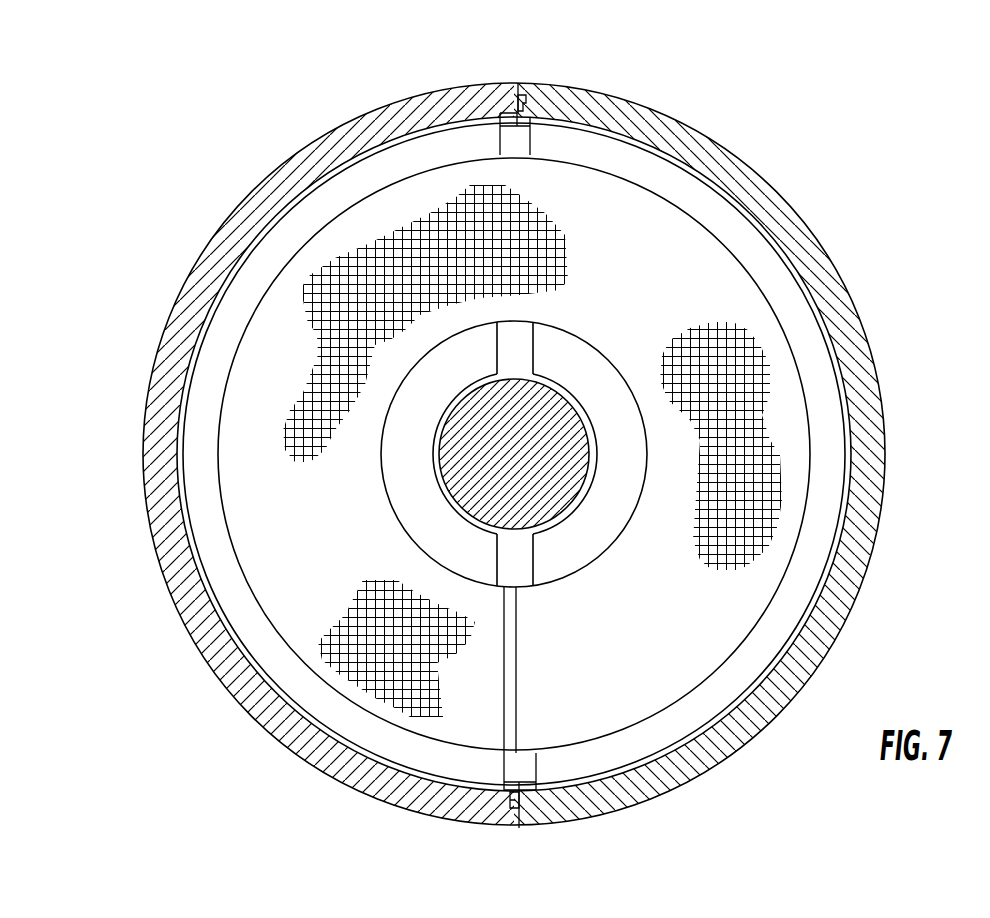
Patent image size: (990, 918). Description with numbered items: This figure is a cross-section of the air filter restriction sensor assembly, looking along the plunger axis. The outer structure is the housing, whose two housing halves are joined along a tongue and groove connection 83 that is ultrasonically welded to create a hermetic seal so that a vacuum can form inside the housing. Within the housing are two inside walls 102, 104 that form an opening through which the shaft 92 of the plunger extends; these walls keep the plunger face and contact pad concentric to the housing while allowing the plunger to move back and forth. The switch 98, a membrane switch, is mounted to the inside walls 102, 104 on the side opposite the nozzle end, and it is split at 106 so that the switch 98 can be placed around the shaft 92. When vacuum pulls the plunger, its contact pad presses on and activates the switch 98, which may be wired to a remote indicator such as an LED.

The tongue and groove connection 83 is at (527, 104).
The shaft 92 is at (565, 458).
The switch 98 is at (655, 663).
The inside wall 102 is at (618, 155).
The inside wall 104 is at (446, 140).
The split 106 is at (512, 683).